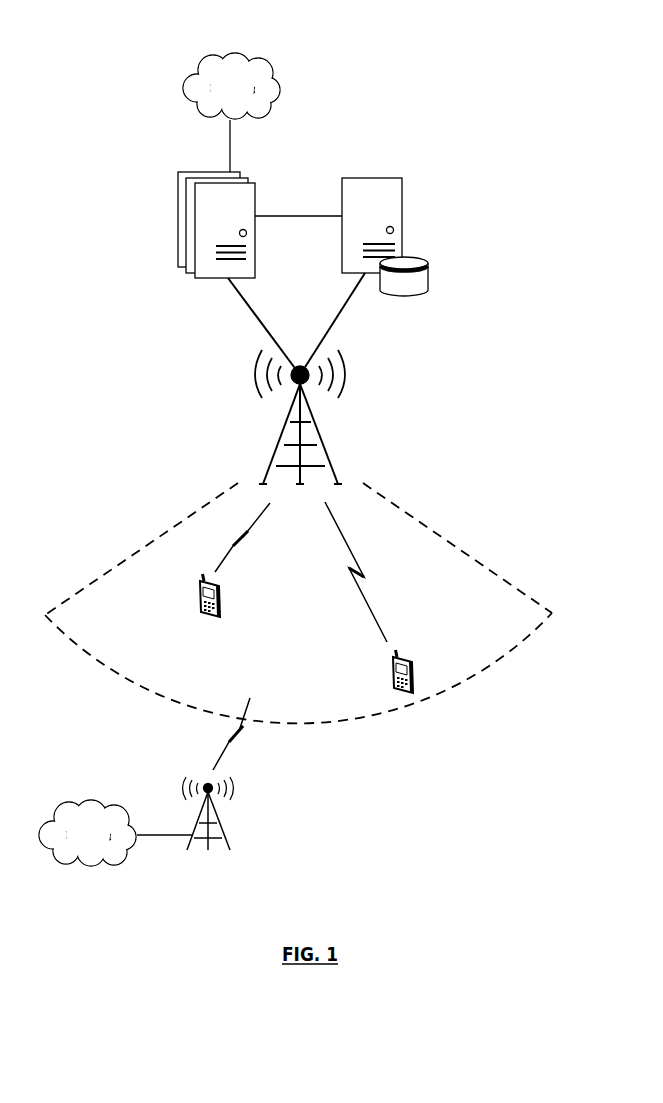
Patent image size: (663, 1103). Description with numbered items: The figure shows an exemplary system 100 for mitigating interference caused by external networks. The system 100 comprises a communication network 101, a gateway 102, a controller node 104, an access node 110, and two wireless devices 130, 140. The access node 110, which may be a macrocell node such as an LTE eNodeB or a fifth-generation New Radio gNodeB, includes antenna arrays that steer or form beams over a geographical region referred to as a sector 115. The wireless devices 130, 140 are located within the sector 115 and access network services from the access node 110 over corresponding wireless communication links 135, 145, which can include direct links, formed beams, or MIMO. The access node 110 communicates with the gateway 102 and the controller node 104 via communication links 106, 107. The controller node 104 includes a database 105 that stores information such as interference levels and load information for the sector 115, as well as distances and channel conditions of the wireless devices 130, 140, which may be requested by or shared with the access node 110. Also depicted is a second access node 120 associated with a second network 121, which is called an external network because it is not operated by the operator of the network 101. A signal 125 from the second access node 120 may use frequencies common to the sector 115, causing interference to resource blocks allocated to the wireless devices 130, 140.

The system 100 is at (414, 31).
The communication network 101 is at (215, 98).
The gateway 102 is at (197, 172).
The controller node 104 is at (402, 178).
The database 105 is at (427, 252).
The communication link 106 is at (340, 311).
The communication link 107 is at (243, 302).
The access node 110 is at (323, 450).
The sector 115 is at (150, 543).
The second access node 120 is at (218, 822).
The second network 121 is at (71, 846).
The signal 125 is at (222, 742).
The wireless device 130 is at (216, 617).
The wireless communication link 135 is at (233, 555).
The wireless device 140 is at (408, 693).
The wireless communication link 145 is at (373, 610).